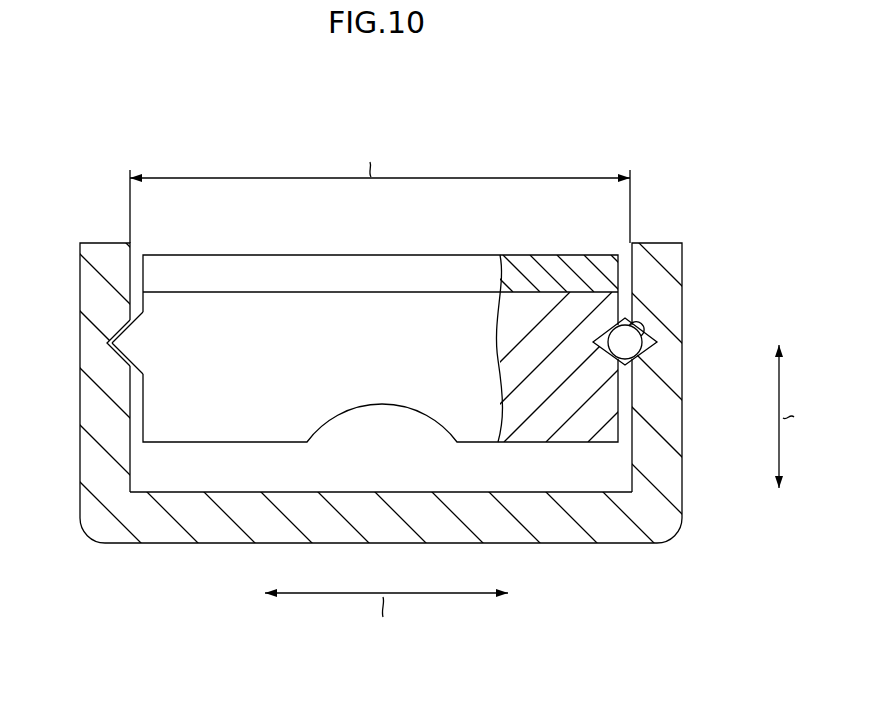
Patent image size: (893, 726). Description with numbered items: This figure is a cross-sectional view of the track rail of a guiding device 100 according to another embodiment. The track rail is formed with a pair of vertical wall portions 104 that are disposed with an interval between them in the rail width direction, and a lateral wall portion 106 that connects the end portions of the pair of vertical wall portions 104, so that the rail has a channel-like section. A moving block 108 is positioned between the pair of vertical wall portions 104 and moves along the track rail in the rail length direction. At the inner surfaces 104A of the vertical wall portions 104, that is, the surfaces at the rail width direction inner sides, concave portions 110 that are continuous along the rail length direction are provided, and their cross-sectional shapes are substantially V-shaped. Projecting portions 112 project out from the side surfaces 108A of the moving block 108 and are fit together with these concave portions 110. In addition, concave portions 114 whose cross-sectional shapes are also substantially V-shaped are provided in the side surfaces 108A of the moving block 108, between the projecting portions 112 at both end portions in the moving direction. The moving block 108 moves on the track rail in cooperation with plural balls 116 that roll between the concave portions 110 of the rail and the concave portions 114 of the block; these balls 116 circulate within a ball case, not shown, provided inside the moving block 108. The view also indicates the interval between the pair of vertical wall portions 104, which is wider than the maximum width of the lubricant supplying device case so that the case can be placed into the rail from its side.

The guiding device 100 is at (651, 171).
The vertical wall portions 104 is at (97, 241).
The inner surfaces 104A is at (133, 427).
The lateral wall portion 106 is at (560, 545).
The moving block 108 is at (402, 254).
The side surfaces 108A is at (137, 383).
The concave portions 110 is at (122, 333).
The projecting portions 112 is at (115, 362).
The concave portions 114 is at (600, 356).
The balls 116 is at (640, 368).